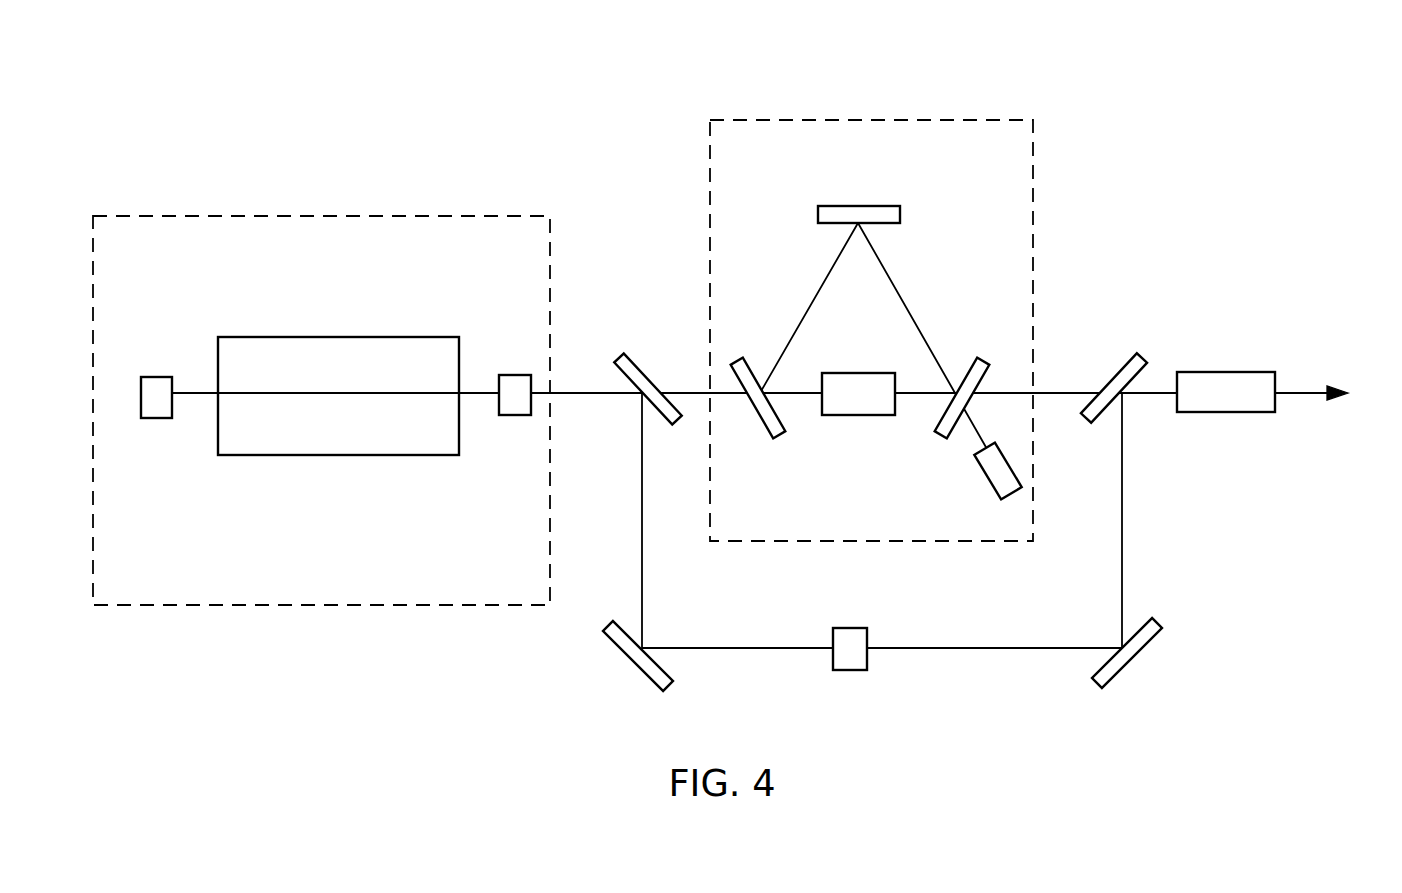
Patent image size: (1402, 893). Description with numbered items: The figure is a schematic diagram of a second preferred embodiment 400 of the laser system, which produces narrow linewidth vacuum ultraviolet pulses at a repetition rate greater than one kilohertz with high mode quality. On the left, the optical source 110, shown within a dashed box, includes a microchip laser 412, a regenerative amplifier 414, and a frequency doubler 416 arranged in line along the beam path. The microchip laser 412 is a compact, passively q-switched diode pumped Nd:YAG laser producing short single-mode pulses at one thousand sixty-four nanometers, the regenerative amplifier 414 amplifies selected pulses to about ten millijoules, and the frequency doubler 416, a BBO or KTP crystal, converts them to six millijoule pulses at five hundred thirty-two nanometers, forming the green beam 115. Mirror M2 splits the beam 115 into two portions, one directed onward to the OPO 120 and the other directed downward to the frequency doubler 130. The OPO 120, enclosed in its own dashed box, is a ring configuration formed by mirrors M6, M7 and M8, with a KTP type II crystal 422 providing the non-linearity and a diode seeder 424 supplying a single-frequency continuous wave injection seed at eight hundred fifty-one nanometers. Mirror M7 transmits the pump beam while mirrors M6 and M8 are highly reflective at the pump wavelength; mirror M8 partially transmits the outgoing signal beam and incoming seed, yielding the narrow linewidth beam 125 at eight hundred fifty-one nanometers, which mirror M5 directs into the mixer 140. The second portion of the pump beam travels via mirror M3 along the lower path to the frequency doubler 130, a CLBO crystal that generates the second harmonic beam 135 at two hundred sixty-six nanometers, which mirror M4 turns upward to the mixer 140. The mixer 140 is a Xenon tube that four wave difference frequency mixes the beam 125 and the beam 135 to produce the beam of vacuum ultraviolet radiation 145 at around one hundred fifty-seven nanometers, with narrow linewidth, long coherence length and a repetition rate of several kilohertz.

The second preferred embodiment 400 is at (1243, 65).
The optical source 110 is at (290, 607).
The microchip laser 412 is at (159, 419).
The regenerative amplifier 414 is at (364, 337).
The frequency doubler 416 is at (517, 375).
The beam 115 is at (591, 393).
The OPO 120 is at (921, 160).
The mirror M2 is at (656, 366).
The mirror M6 is at (902, 216).
The mirror M7 is at (755, 360).
The mirror M8 is at (977, 362).
The KTP crystal 422 is at (859, 417).
The diode seeder 424 is at (978, 472).
The beam of radiation 125 is at (1064, 393).
The mirror M5 is at (1131, 358).
The mixer 140 is at (1230, 413).
The beam of vacuum ultraviolet radiation 145 is at (1306, 392).
The mirror M3 is at (620, 651).
The frequency doubler 130 is at (850, 627).
The beam of radiation 135 is at (963, 647).
The mirror M4 is at (1145, 649).